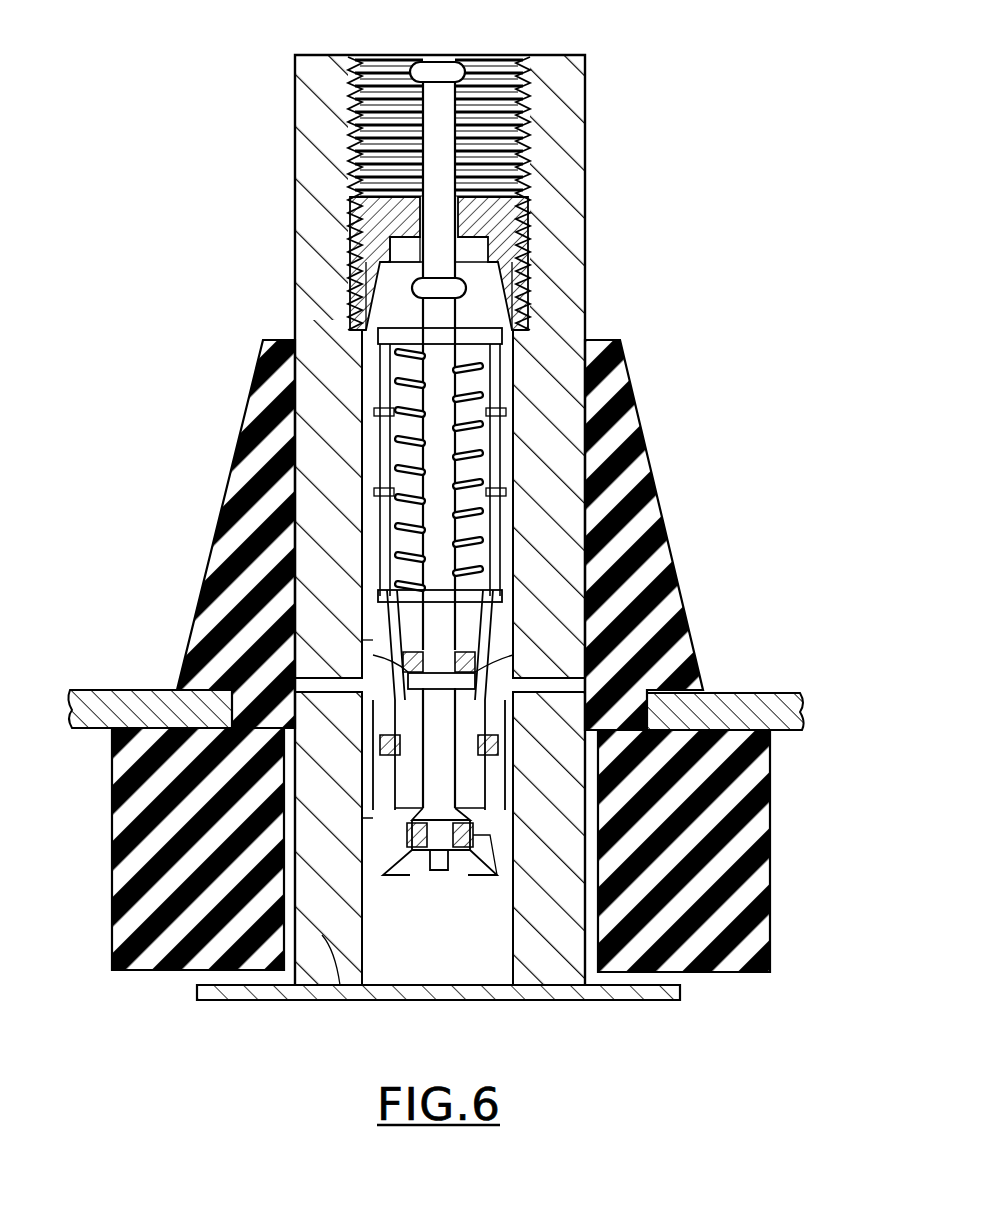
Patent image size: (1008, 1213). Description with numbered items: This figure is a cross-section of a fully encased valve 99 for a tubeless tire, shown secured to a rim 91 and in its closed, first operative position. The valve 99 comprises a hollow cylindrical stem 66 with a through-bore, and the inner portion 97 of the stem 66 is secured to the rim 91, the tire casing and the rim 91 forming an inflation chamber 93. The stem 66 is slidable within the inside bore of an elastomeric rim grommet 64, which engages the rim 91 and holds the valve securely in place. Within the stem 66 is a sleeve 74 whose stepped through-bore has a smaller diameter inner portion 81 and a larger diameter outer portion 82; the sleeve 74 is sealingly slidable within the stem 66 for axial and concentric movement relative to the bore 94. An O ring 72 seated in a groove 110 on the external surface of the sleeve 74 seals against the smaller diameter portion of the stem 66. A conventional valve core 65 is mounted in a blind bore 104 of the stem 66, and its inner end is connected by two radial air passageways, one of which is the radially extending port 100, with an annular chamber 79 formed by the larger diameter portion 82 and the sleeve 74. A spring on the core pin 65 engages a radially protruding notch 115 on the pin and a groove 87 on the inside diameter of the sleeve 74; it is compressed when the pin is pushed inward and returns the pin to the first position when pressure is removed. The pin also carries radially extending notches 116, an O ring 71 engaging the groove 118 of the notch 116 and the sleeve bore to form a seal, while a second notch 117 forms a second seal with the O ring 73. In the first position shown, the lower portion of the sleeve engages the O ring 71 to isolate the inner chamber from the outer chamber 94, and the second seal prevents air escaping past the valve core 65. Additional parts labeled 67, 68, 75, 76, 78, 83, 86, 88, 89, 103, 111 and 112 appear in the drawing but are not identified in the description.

The rim grommet 64 is at (122, 950).
The valve core pin 65 is at (440, 72).
The valve stem 66 is at (585, 115).
The spring seat 67 is at (505, 330).
The adjusting nut 68 is at (520, 232).
The O ring 71 is at (480, 675).
The O ring 72 is at (500, 760).
The O ring 73 is at (476, 845).
The sleeve 74 is at (335, 960).
The clamp wedge 75 is at (590, 340).
The nut lower portion 76 is at (545, 278).
The cavity 78 is at (395, 262).
The annular chamber 79 is at (382, 414).
The smaller diameter inner portion 81 is at (400, 640).
The larger diameter outer portion 82 is at (390, 690).
The seal 83 is at (402, 840).
The port 86 is at (395, 662).
The groove 87 is at (505, 585).
The outlet opening 88 is at (450, 975).
The base plate 89 is at (655, 995).
The rim 91 is at (100, 700).
The inflation chamber 93 is at (375, 790).
The bore 94 is at (378, 468).
The inner portion 97 is at (362, 972).
The valve 99 is at (295, 135).
The radially extending port 100 is at (380, 745).
The nut portion 103 is at (365, 300).
The blind bore 104 is at (355, 205).
The groove 110 is at (495, 790).
The nozzle 111 is at (452, 870).
The guide 112 is at (500, 690).
The radially protruding notch 115 is at (466, 290).
The radially extending notch 116 is at (520, 705).
The second notch 117 is at (415, 858).
The groove 118 is at (475, 655).